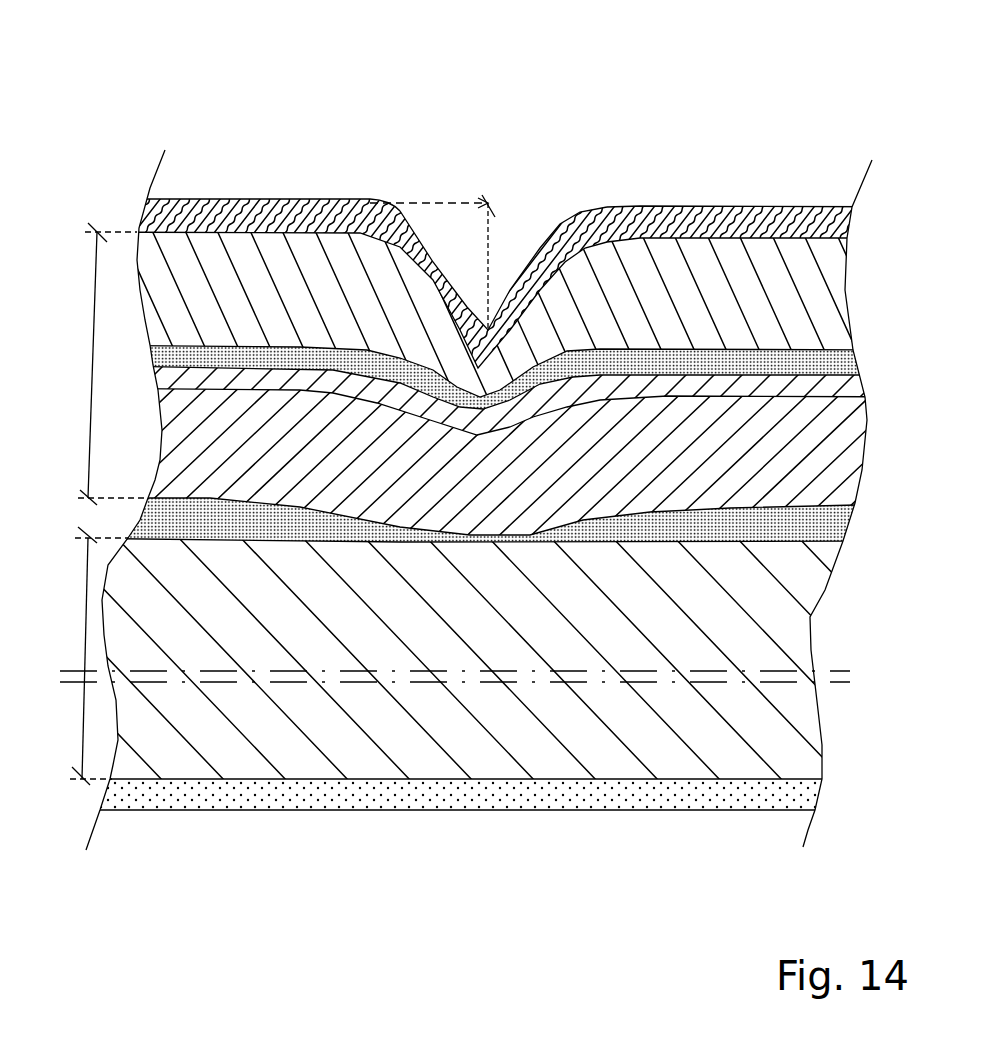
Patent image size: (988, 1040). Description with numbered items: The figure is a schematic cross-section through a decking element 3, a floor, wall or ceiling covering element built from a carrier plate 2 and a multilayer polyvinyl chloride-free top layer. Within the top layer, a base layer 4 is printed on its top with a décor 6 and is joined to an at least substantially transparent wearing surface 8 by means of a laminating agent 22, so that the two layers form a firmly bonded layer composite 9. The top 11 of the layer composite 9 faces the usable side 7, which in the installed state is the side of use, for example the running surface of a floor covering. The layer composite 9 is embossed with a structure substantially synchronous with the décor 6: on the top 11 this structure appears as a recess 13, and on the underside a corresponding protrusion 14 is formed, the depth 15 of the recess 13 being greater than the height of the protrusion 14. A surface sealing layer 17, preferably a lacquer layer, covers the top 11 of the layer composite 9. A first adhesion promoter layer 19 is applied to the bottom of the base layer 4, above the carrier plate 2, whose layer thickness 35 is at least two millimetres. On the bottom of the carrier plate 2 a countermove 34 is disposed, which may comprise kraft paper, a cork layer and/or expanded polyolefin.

The carrier plate 2 is at (780, 628).
The decking element 3 is at (770, 108).
The base layer 4 is at (815, 455).
The décor 6 is at (822, 385).
The usable side 7 is at (653, 207).
The wearing surface 8 is at (823, 300).
The layer composite 9 is at (93, 368).
The top of the layer composite 11 is at (286, 222).
The recess 13 is at (518, 237).
The protrusion 14 is at (483, 445).
The depth of the recess 15 is at (490, 248).
The surface sealing layer 17 is at (845, 226).
The first adhesion promoter layer 19 is at (815, 525).
The laminating agent 22 is at (822, 360).
The countermove 34 is at (790, 800).
The layer thickness of the carrier plate 35 is at (86, 640).